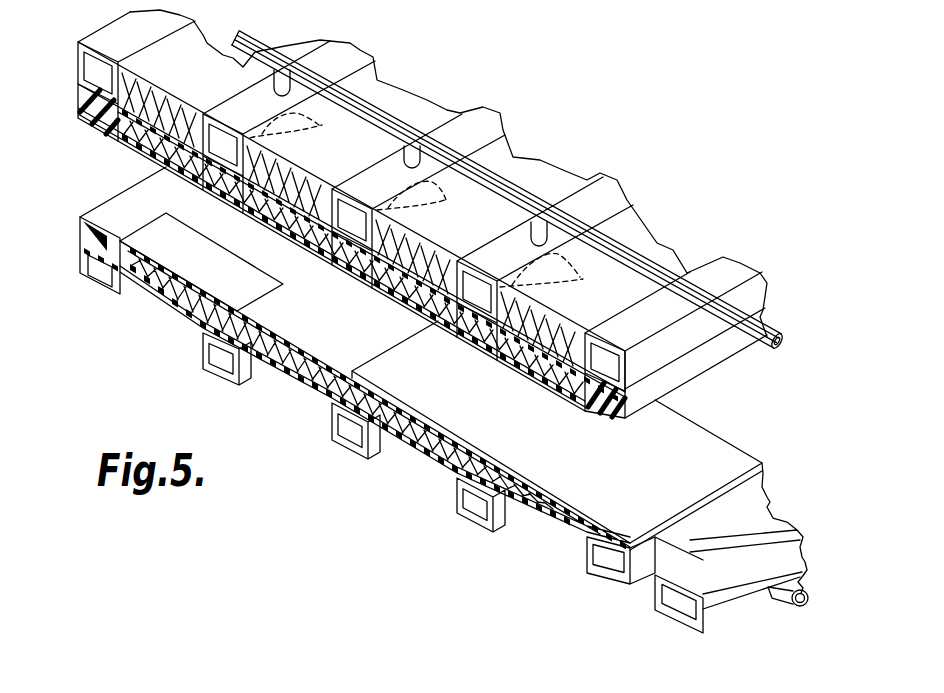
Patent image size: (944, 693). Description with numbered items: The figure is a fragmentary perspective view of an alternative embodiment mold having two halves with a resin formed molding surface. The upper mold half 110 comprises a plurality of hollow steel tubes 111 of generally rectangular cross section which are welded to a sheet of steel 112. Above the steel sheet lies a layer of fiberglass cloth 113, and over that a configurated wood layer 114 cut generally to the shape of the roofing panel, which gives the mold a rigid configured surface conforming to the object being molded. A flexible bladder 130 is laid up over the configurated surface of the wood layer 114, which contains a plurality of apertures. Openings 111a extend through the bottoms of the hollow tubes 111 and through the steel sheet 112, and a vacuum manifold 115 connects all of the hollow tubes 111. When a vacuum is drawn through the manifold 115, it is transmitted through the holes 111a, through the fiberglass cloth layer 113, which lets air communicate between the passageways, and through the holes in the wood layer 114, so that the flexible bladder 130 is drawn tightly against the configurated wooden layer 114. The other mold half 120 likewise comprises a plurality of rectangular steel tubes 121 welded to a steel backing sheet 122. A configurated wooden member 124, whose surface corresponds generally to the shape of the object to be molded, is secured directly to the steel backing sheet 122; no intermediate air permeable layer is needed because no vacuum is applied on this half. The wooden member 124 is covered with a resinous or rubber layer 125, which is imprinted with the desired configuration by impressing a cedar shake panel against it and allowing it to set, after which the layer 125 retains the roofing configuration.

The mold half 110 is at (580, 138).
The hollow steel tubes 111 is at (352, 44).
The openings 111a is at (322, 118).
The sheet of steel 112 is at (204, 95).
The fiberglass cloth layer 113 is at (397, 262).
The configurated wood layer 114 is at (282, 198).
The vacuum manifold 115 is at (390, 117).
The flexible bladder 130 is at (138, 154).
The other mold half 120 is at (142, 323).
The rectangular steel tubes 121 is at (97, 288).
The steel backing sheet 122 is at (165, 315).
The configurated wooden member 124 is at (310, 377).
The resinous or rubber layer 125 is at (420, 386).